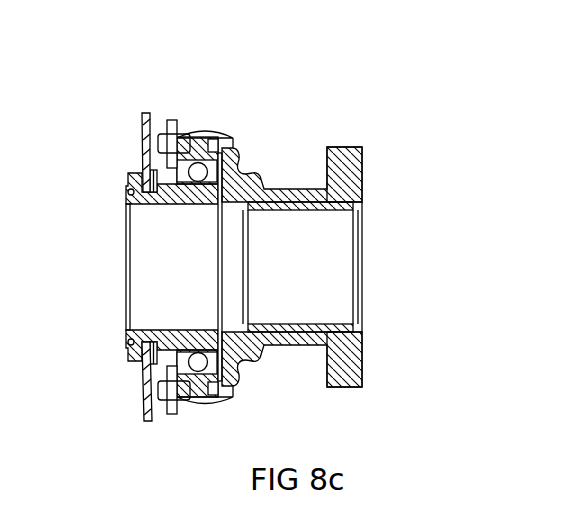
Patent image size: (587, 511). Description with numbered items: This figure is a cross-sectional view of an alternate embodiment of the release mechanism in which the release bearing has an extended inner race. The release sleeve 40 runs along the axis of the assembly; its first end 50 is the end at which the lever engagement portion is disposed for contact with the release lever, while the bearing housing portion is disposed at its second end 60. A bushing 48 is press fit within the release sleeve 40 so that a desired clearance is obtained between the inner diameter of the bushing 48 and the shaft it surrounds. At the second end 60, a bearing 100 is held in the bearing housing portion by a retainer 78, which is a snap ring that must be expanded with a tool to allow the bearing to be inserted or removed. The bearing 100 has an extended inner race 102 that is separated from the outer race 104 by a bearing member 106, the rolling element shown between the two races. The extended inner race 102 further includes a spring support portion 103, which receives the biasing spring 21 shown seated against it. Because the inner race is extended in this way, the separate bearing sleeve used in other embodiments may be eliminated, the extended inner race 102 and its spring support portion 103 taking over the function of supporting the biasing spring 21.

The biasing spring 21 is at (143, 127).
The release sleeve 40 is at (299, 180).
The bushing 48 is at (307, 209).
The first end 50 is at (369, 136).
The second end 60 is at (218, 417).
The retainer 78 is at (171, 120).
The bearing 100 is at (130, 267).
The extended inner race 102 is at (153, 207).
The spring support portion 103 is at (127, 192).
The outer race 104 is at (211, 152).
The bearing member 106 is at (197, 168).